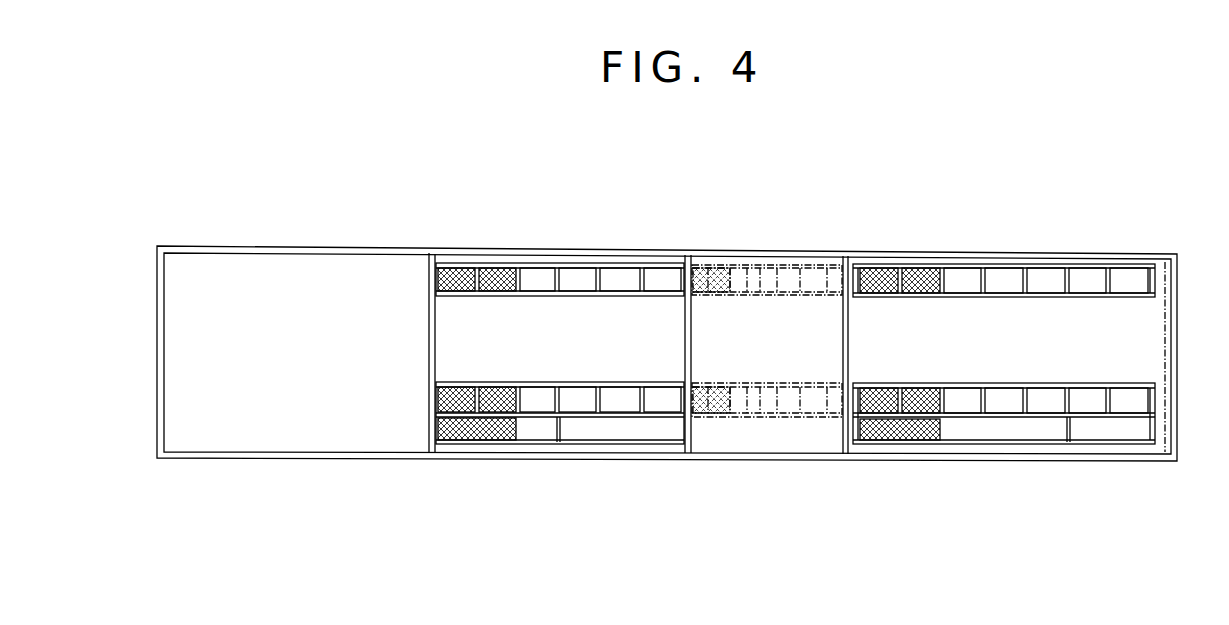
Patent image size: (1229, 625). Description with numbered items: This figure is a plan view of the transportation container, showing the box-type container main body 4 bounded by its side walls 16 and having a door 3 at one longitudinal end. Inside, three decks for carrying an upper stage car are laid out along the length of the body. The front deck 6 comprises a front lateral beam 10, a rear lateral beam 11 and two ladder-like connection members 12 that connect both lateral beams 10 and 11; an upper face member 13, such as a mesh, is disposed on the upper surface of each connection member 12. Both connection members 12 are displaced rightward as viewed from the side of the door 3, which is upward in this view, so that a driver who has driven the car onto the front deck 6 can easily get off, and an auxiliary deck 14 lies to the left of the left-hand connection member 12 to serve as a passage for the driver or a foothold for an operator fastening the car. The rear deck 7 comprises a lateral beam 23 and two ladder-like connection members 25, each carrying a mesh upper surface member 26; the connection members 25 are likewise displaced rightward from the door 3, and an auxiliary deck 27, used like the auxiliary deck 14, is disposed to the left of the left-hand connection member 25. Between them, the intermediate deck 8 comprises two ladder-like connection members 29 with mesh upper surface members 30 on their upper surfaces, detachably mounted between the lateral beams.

The door 3 is at (1172, 336).
The container main body 4 is at (236, 240).
The front deck 6 is at (560, 296).
The rear deck 7 is at (1004, 298).
The intermediate deck 8 is at (767, 299).
The front lateral beam 10 is at (428, 337).
The rear lateral beam 11 is at (684, 337).
The ladder-like connection members 12 is at (612, 262).
The upper face member 13 is at (462, 287).
The auxiliary deck 14 is at (482, 442).
The side wall 16 is at (331, 252).
The lateral beam 23 is at (849, 343).
The ladder-like connection members 25 is at (1056, 295).
The upper surface member 26 is at (918, 291).
The auxiliary deck 27 is at (898, 443).
The ladder-like connection members 29 is at (777, 296).
The upper surface members 30 is at (708, 388).